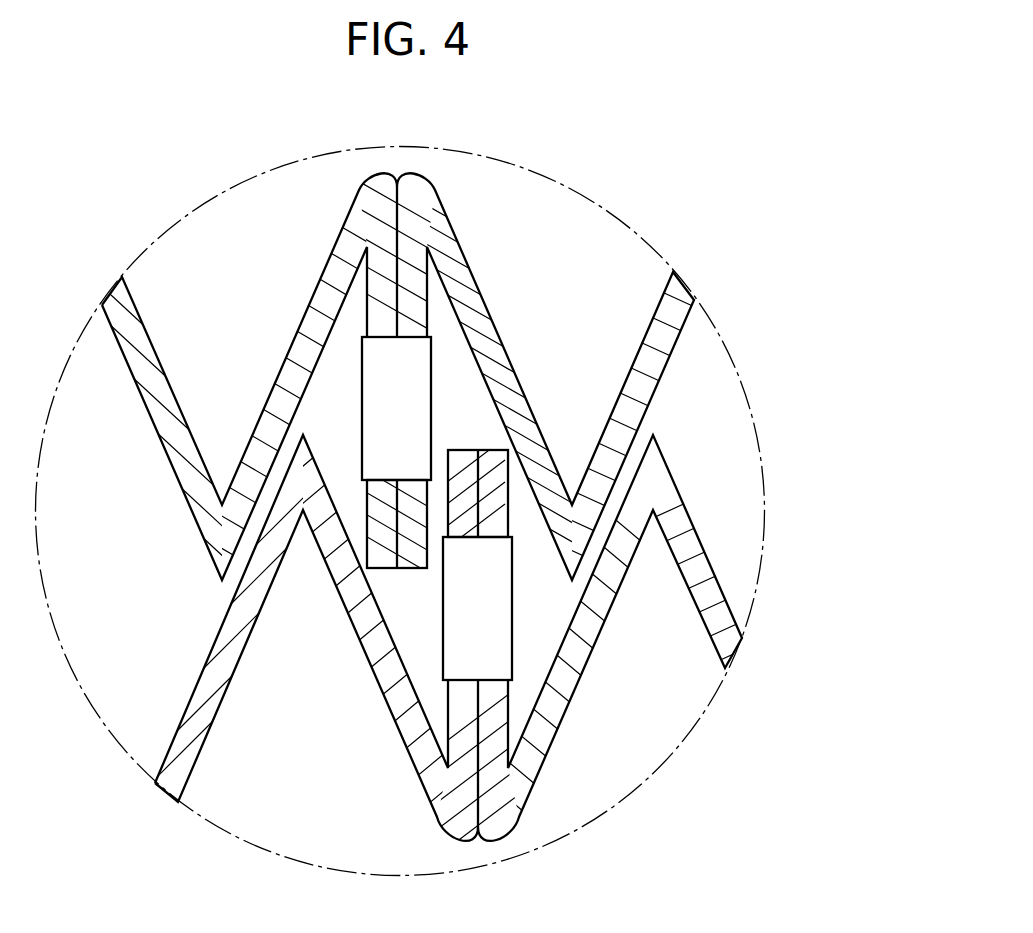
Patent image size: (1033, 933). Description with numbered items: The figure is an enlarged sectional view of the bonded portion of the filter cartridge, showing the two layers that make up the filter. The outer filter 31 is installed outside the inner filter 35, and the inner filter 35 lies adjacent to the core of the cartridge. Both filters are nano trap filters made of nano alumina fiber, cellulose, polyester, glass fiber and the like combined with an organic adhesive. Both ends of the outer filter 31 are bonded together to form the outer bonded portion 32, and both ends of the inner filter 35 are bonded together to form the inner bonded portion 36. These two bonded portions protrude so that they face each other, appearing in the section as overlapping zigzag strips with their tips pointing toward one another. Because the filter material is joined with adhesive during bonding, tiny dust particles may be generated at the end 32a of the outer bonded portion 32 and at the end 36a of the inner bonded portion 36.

The outer filter 31 is at (472, 212).
The outer bonded portion 32 is at (401, 384).
The end of the outer bonded portion 32a is at (554, 396).
The inner filter 35 is at (555, 792).
The inner bonded portion 36 is at (463, 651).
The end of the inner bonded portion 36a is at (611, 604).